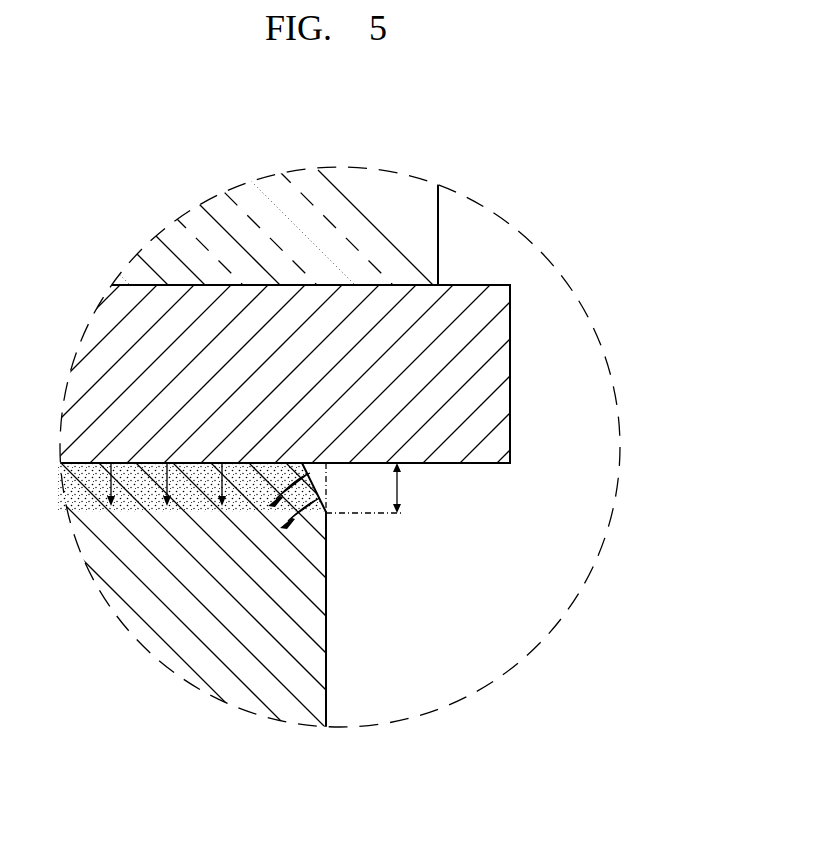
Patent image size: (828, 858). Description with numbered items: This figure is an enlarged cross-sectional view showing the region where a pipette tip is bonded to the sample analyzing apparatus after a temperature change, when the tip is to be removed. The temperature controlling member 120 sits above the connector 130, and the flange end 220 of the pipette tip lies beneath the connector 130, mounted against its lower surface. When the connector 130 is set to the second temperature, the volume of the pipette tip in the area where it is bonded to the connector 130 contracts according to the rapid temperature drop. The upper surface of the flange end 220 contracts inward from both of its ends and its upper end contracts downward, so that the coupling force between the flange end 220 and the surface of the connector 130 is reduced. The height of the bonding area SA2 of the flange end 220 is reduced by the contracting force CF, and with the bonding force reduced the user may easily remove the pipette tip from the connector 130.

The temperature controlling member 120 is at (413, 238).
The connector 130 is at (493, 385).
The flange end 220 is at (310, 638).
The contracting force CF is at (193, 504).
The bonding area SA2 is at (388, 488).